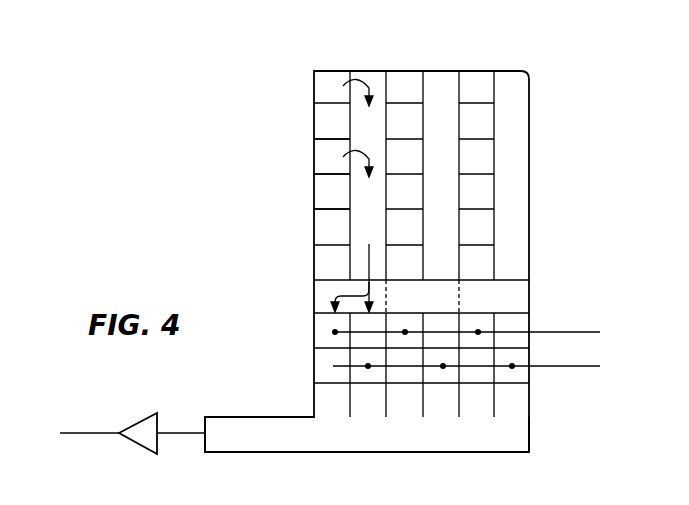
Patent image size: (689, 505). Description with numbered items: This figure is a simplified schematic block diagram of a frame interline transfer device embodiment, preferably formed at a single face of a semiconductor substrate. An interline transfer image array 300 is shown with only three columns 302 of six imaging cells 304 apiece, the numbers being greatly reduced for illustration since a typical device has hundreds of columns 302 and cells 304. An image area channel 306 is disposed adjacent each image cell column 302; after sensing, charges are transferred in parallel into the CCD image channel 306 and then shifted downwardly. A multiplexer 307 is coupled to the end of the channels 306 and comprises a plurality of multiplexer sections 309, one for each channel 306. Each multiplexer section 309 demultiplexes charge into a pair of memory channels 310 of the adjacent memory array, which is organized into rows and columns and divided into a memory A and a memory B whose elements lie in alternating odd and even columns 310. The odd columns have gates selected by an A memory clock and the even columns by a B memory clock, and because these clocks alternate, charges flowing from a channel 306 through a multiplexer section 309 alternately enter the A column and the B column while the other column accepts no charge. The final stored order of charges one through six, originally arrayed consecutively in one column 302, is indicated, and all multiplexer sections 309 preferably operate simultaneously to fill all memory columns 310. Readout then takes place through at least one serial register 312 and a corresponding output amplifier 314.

The interline transfer image array 300 is at (574, 136).
The column 302 is at (474, 80).
The imaging cell 304 is at (318, 192).
The image area channel 306 is at (515, 78).
The multiplexer 307 is at (518, 292).
The multiplexer section 309 is at (520, 305).
The memory channel 310 is at (486, 467).
The serial register 312 is at (224, 440).
The output amplifier 314 is at (137, 425).